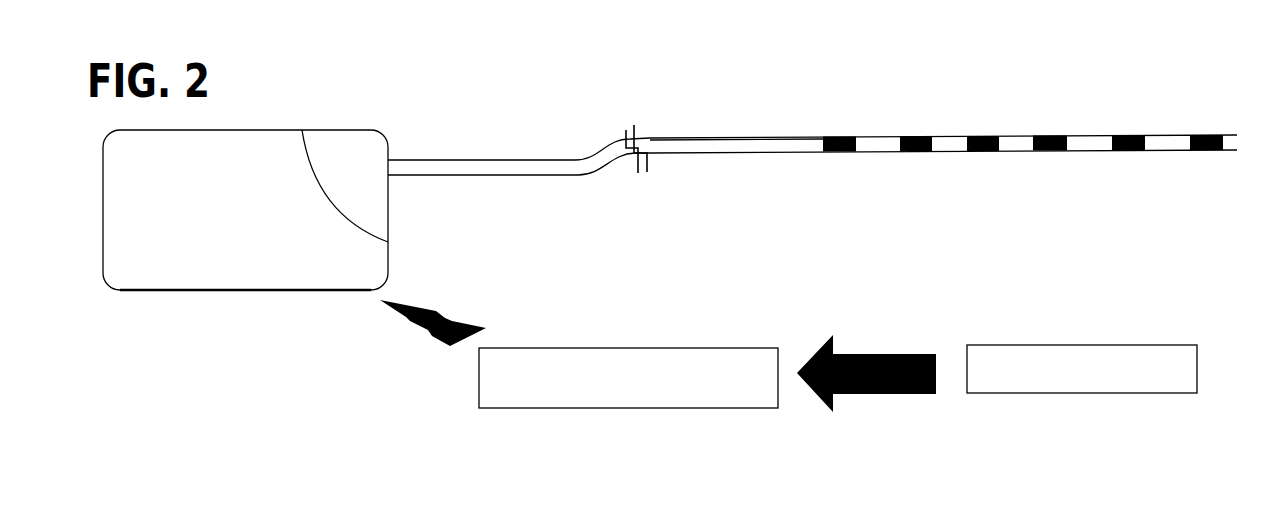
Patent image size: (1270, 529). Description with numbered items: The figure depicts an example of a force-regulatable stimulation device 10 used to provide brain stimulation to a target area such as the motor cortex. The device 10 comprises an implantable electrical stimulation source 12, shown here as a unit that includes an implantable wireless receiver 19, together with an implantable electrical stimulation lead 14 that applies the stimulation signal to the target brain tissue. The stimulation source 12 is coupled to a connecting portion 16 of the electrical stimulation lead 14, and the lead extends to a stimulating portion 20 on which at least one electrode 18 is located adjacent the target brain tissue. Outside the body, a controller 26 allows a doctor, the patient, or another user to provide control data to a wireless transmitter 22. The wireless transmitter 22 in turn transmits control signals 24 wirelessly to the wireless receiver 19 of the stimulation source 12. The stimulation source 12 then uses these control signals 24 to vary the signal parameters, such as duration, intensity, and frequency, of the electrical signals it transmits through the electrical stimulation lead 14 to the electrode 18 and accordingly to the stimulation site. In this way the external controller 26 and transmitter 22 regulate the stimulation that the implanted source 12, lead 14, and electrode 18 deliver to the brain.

The force-regulatable stimulation device 10 is at (862, 83).
The implantable electrical stimulation source 12 is at (343, 148).
The implantable electrical stimulation lead 14 is at (525, 160).
The connecting portion 16 is at (724, 172).
The electrode 18 is at (823, 157).
The implantable wireless receiver 19 is at (202, 270).
The stimulating portion 20 is at (1023, 145).
The wireless transmitter 22 is at (677, 350).
The wireless control signals 24 is at (446, 313).
The controller 26 is at (1072, 345).